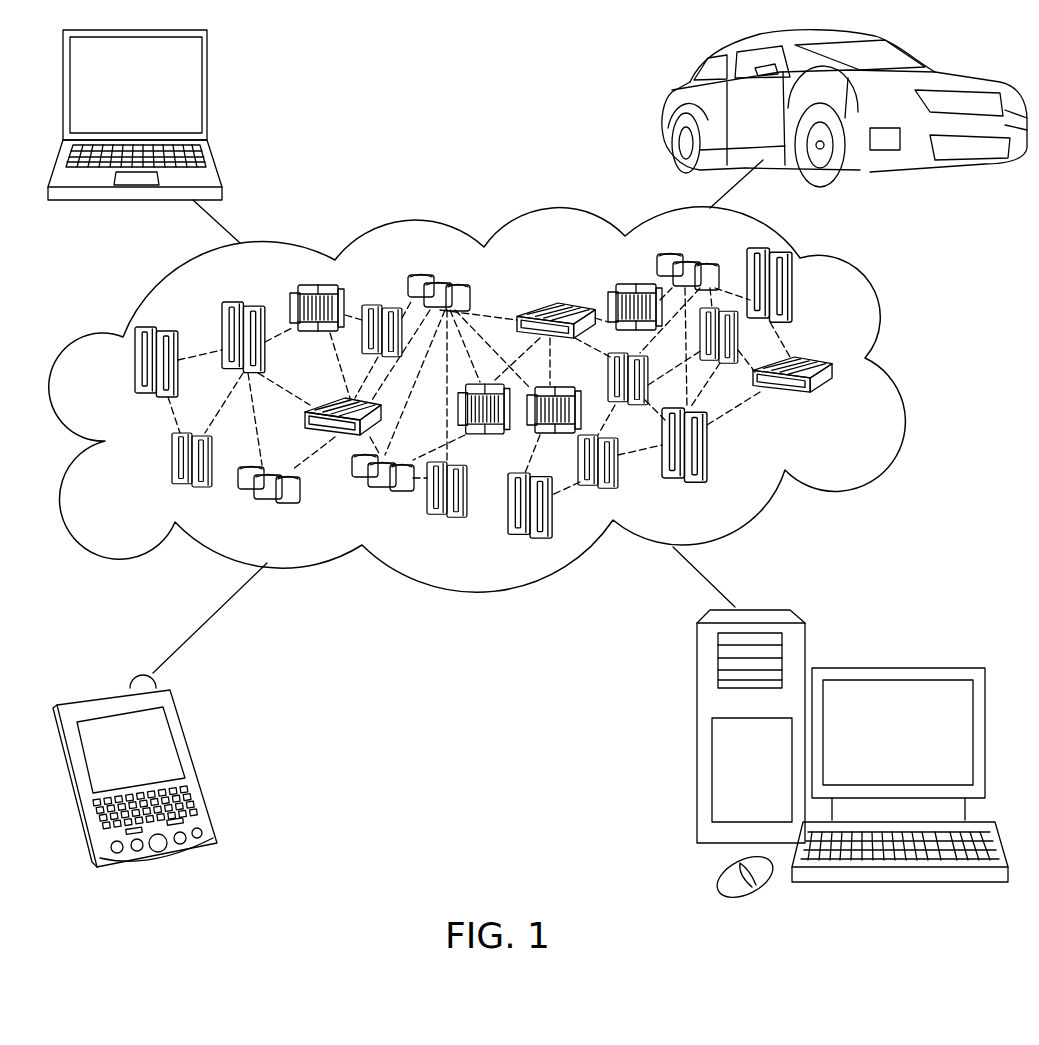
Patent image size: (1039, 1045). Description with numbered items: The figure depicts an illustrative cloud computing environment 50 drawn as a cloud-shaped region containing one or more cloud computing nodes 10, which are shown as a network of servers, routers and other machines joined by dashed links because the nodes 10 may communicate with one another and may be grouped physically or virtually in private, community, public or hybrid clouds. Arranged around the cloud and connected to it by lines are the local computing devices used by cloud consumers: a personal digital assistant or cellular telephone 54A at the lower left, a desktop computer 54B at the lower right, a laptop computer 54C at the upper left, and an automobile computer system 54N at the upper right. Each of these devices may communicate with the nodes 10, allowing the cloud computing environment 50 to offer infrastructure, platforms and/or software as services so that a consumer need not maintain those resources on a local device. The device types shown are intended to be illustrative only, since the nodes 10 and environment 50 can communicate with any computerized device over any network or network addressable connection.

The cloud computing node 10 is at (836, 400).
The cloud computing environment 50 is at (897, 377).
The personal digital assistant or cellular telephone 54A is at (197, 762).
The desktop computer 54B is at (893, 667).
The laptop computer 54C is at (207, 92).
The automobile computer system 54N is at (665, 108).